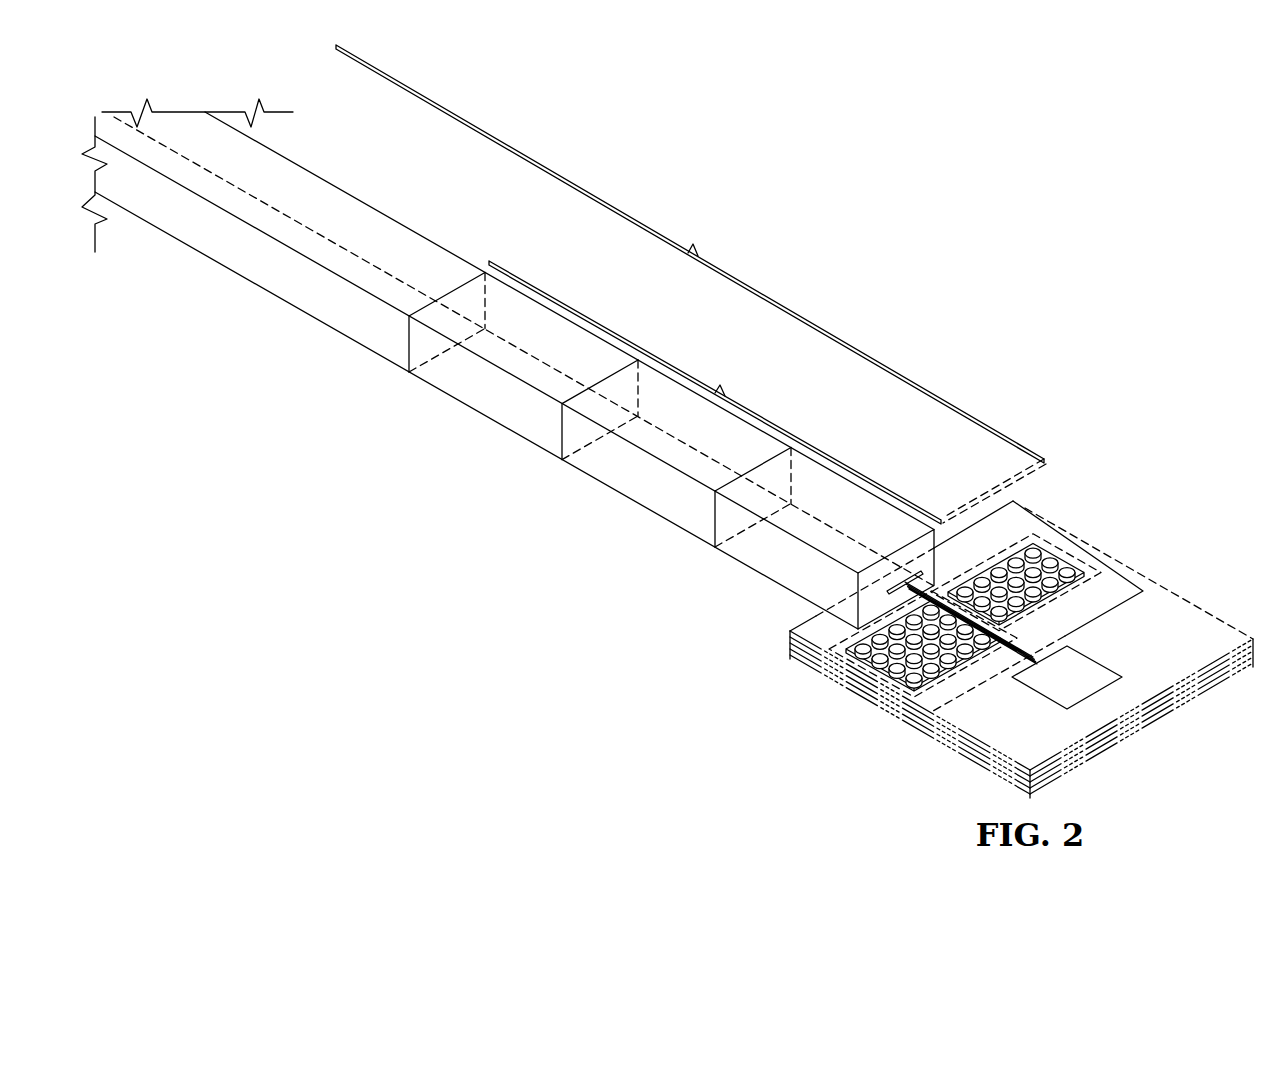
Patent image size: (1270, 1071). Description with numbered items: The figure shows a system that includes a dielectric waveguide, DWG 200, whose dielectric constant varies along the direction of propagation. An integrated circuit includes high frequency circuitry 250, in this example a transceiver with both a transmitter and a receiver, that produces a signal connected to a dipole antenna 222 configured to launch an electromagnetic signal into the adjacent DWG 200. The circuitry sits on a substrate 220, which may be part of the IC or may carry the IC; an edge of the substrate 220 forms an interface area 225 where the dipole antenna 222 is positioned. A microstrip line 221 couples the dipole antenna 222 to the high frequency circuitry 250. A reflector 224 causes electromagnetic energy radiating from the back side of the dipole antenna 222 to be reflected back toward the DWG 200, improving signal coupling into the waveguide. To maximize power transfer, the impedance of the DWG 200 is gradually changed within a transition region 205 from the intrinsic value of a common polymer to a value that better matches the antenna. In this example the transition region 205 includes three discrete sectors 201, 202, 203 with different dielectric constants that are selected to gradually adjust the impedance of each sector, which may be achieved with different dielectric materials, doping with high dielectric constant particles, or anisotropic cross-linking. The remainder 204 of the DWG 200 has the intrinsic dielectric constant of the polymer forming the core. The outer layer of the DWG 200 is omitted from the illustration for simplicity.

The dielectric waveguide (DWG) 200 is at (691, 284).
The first sector of the transition region 201 is at (729, 553).
The second sector of the transition region 202 is at (638, 497).
The third sector of the transition region 203 is at (483, 410).
The remainder of the DWG 204 is at (330, 320).
The transition region 205 is at (732, 355).
The substrate 220 is at (1172, 722).
The microstrip line 221 is at (1019, 649).
The dipole antenna 222 is at (890, 589).
The reflector 224 is at (1082, 559).
The interface area 225 is at (908, 557).
The high frequency circuitry 250 is at (1090, 661).